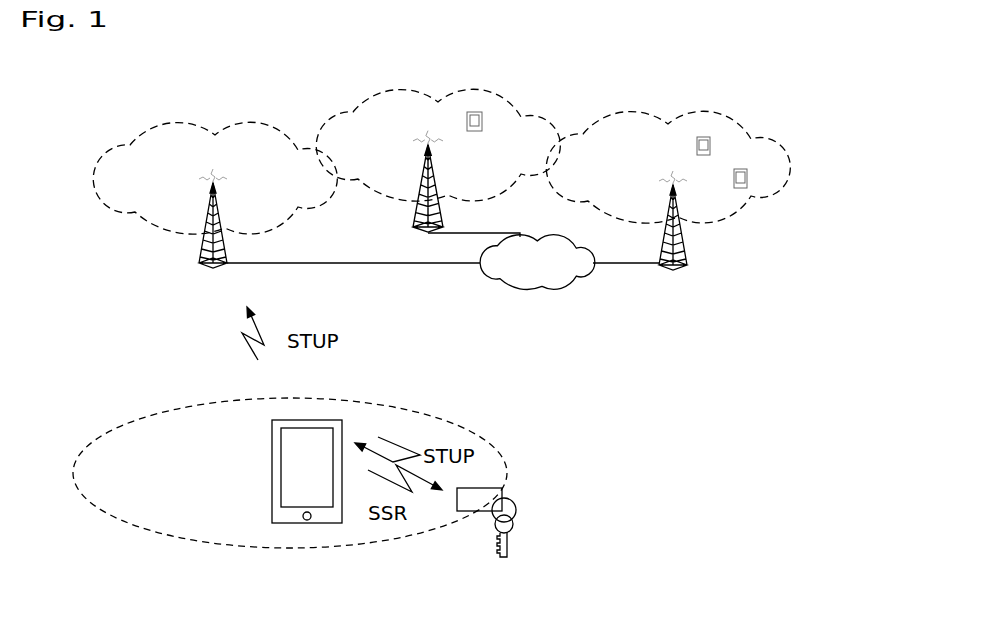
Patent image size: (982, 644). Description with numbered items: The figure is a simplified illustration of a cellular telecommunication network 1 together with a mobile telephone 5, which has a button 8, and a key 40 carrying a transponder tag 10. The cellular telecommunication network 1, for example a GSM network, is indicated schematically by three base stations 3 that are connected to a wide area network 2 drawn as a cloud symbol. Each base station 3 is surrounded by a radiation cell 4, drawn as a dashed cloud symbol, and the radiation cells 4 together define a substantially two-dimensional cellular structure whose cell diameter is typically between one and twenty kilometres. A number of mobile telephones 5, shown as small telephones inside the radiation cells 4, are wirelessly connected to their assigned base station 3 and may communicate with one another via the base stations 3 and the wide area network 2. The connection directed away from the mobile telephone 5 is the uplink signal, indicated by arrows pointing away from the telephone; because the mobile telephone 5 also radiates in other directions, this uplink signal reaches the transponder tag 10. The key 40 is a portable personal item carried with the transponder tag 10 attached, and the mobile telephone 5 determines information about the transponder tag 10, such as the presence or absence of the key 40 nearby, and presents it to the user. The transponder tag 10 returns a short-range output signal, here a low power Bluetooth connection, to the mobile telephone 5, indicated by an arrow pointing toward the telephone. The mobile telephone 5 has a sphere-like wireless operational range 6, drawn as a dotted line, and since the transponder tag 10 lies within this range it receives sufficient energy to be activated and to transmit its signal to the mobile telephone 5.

The cellular telecommunication network 1 is at (790, 323).
The wide area network 2 is at (557, 287).
The base station 3 is at (203, 253).
The radiation cell 4 is at (237, 152).
The mobile telephone 5 is at (747, 176).
The wireless operational range 6 is at (437, 417).
The button 8 is at (307, 520).
The transponder tag 10 is at (477, 496).
The key 40 is at (503, 533).